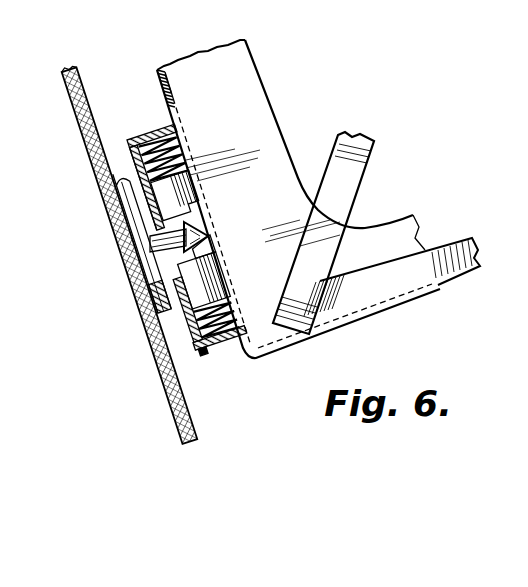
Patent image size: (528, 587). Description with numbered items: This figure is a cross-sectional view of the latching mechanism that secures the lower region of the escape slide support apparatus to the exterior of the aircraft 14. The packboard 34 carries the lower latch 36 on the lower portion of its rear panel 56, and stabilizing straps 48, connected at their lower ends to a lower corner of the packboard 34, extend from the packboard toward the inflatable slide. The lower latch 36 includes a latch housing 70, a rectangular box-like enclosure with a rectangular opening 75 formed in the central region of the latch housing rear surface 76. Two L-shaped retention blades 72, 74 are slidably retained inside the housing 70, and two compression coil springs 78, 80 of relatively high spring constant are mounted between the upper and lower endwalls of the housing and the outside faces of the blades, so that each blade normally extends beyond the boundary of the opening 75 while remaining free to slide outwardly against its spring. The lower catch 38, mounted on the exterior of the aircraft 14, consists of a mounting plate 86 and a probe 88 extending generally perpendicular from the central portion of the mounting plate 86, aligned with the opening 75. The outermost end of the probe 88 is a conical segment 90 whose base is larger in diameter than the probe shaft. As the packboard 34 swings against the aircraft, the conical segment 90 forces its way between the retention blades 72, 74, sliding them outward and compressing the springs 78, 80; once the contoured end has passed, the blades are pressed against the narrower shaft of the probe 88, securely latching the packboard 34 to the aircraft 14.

The aircraft 14 is at (192, 420).
The packboard 34 is at (254, 93).
The lower latch 36 is at (213, 352).
The lower catch 38 is at (168, 321).
The stabilizing straps 48 is at (356, 170).
The rear panel 56 is at (158, 93).
The latch housing 70 is at (134, 140).
The retention blade 72 is at (192, 182).
The retention blade 74 is at (221, 272).
The rectangular opening 75 is at (217, 250).
The latch housing rear surface 76 is at (135, 165).
The spring 78 is at (176, 147).
The spring 80 is at (229, 304).
The mounting plate 86 is at (128, 214).
The probe 88 is at (175, 263).
The conical segment 90 is at (206, 232).